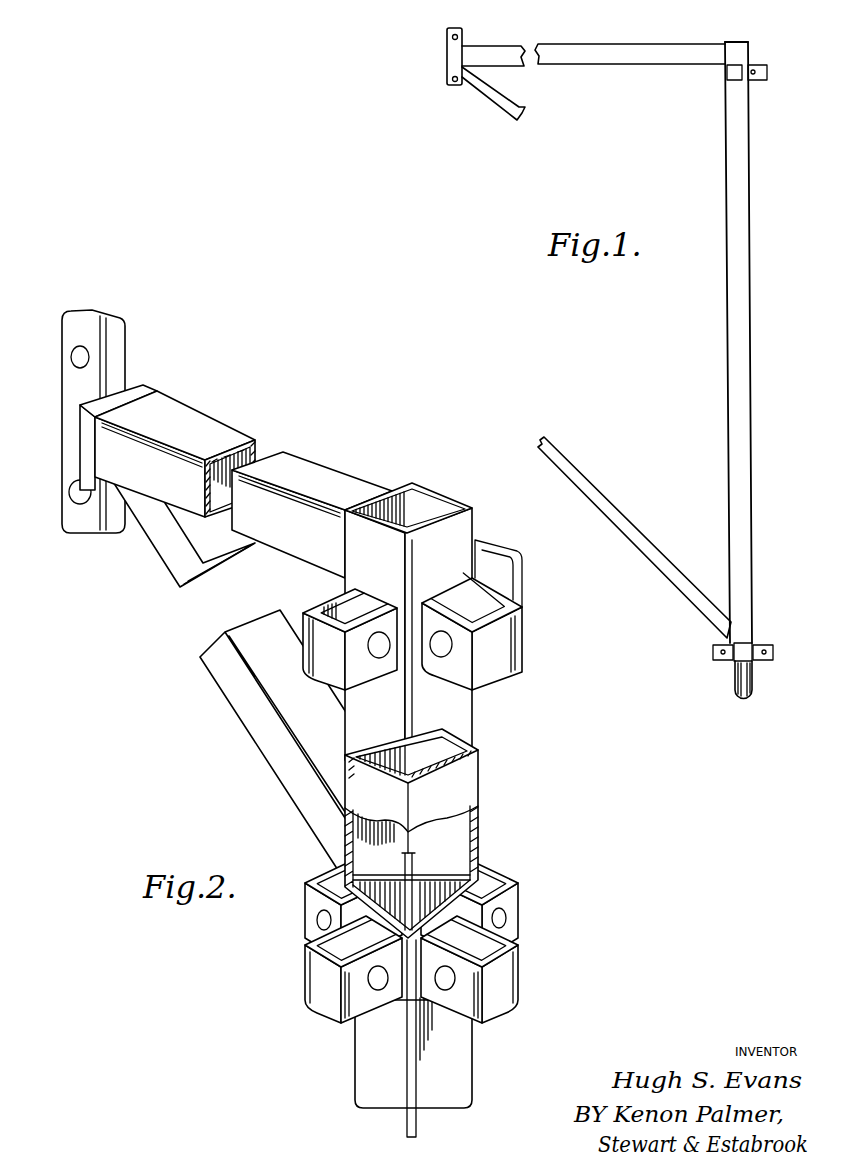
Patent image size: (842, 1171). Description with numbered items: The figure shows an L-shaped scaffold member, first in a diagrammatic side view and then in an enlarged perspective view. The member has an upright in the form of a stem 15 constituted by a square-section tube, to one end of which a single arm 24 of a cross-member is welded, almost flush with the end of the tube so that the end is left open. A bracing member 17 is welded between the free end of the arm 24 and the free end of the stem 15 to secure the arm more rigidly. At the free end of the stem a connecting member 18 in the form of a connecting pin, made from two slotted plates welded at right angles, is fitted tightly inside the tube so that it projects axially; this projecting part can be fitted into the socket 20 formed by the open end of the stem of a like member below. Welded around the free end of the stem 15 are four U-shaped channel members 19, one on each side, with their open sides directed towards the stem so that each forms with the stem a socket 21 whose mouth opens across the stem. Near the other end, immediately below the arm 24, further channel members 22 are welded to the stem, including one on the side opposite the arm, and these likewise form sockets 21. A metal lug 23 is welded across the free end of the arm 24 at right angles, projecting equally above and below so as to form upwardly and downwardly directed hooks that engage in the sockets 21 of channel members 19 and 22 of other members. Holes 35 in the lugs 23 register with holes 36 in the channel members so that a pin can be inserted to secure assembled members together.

In FIG. 1, the stem 15 is at (730, 362).
In FIG. 2, the stem 15 is at (478, 768).
In FIG. 1, the bracing member 17 is at (511, 110).
In FIG. 2, the bracing member 17 is at (170, 559).
In FIG. 1, the connecting member 18 is at (737, 692).
In FIG. 2, the connecting member 18 is at (466, 1059).
In FIG. 1, the channel member 19 is at (714, 651).
In FIG. 2, the channel member 19 is at (308, 901).
In FIG. 1, the socket 20 is at (734, 42).
In FIG. 2, the socket 20 is at (428, 498).
In FIG. 2, the socket 21 is at (492, 548).
In FIG. 1, the channel member 22 is at (727, 81).
In FIG. 2, the channel member 22 is at (320, 601).
In FIG. 1, the lug 23 is at (457, 86).
In FIG. 2, the lug 23 is at (120, 377).
In FIG. 1, the arm 24 is at (614, 66).
In FIG. 2, the arm 24 is at (325, 466).
In FIG. 1, the hole 35 is at (452, 38).
In FIG. 2, the hole 35 is at (89, 359).
In FIG. 1, the hole 36 is at (755, 65).
In FIG. 2, the hole 36 is at (453, 645).